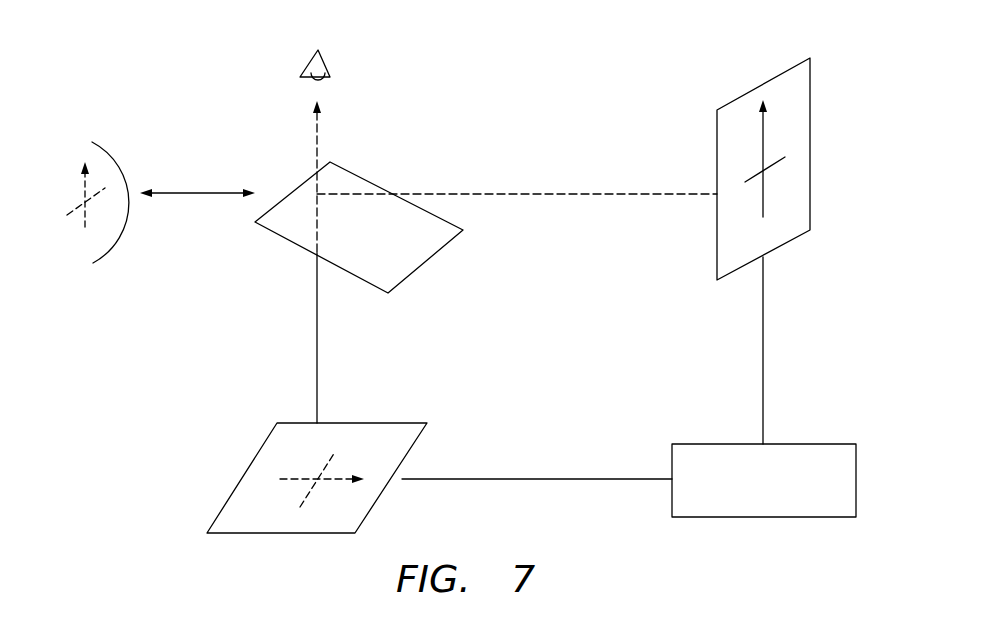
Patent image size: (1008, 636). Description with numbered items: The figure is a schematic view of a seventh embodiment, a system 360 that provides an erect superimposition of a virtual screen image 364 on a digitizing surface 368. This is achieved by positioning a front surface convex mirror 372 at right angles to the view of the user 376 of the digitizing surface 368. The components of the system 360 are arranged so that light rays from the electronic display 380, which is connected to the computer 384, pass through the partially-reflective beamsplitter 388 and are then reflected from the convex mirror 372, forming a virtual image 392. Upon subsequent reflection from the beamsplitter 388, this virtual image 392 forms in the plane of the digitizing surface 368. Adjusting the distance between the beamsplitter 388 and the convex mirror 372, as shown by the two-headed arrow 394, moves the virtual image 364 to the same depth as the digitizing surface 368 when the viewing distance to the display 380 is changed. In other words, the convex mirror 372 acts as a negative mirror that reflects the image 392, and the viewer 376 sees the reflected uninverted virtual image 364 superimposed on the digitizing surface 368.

The system 360 is at (558, 148).
The virtual screen image 364 is at (300, 500).
The digitizing surface 368 is at (418, 442).
The front surface convex mirror 372 is at (125, 230).
The user 376 is at (326, 63).
The electronic display 380 is at (788, 243).
The computer 384 is at (763, 517).
The partially-reflective beamsplitter 388 is at (430, 262).
The virtual image 392 is at (81, 220).
The two-headed arrow 394 is at (198, 193).